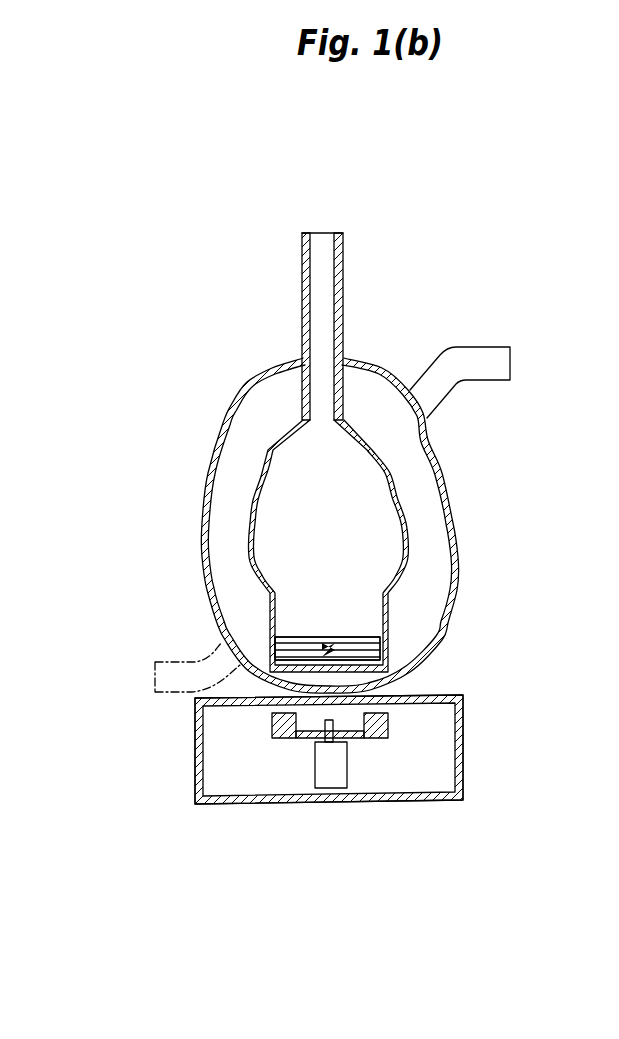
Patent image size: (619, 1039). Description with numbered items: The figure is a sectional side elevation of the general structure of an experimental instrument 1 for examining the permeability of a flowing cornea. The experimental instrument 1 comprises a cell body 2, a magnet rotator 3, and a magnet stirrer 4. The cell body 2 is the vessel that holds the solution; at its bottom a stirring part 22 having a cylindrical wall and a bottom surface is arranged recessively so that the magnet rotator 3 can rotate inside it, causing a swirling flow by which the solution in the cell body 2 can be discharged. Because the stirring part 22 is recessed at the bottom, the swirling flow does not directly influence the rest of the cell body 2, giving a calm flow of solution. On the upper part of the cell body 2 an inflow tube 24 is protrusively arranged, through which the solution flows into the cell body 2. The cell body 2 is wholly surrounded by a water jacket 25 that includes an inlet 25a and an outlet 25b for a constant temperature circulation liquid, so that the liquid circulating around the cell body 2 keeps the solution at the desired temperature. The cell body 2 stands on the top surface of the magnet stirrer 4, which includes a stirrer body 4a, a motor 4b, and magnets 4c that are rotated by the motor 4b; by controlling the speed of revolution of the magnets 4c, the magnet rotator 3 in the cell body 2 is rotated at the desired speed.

The experimental instrument 1 is at (208, 212).
The cell body 2 is at (363, 420).
The magnet rotator 3 is at (372, 633).
The stirring part 22 is at (378, 648).
The inflow tube 24 is at (343, 253).
The water jacket 25 is at (452, 488).
The inlet of a constant temperature circulation liquid 25a is at (178, 693).
The outlet of a constant temperature circulation liquid 25b is at (498, 365).
The magnet stirrer 4 is at (361, 783).
The stirrer body 4a is at (253, 803).
The motor 4b is at (338, 780).
The magnets 4c is at (272, 724).